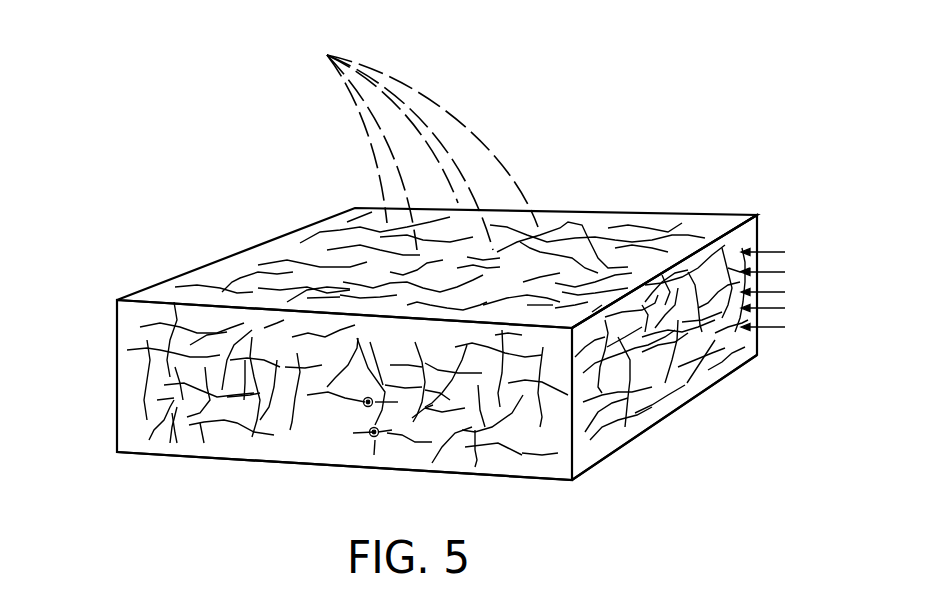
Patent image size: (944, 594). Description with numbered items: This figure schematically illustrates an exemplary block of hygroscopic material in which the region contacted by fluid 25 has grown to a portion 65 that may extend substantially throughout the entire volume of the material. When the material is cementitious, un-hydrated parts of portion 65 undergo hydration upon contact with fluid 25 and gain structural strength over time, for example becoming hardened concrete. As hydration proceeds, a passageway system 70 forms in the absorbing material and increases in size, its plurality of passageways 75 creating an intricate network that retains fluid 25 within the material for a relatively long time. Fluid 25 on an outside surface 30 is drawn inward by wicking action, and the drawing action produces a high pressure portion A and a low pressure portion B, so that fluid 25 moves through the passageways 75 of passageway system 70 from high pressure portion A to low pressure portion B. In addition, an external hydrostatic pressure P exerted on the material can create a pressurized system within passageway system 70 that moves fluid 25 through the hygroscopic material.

The passageway system 70 is at (183, 242).
The plurality of passageways 75 is at (147, 368).
The surface 30 is at (725, 215).
The fluid 25 is at (435, 100).
The portion 65 is at (532, 435).
The high pressure portion A is at (362, 403).
The low pressure portion B is at (372, 434).
The external hydrostatic pressure P is at (787, 242).